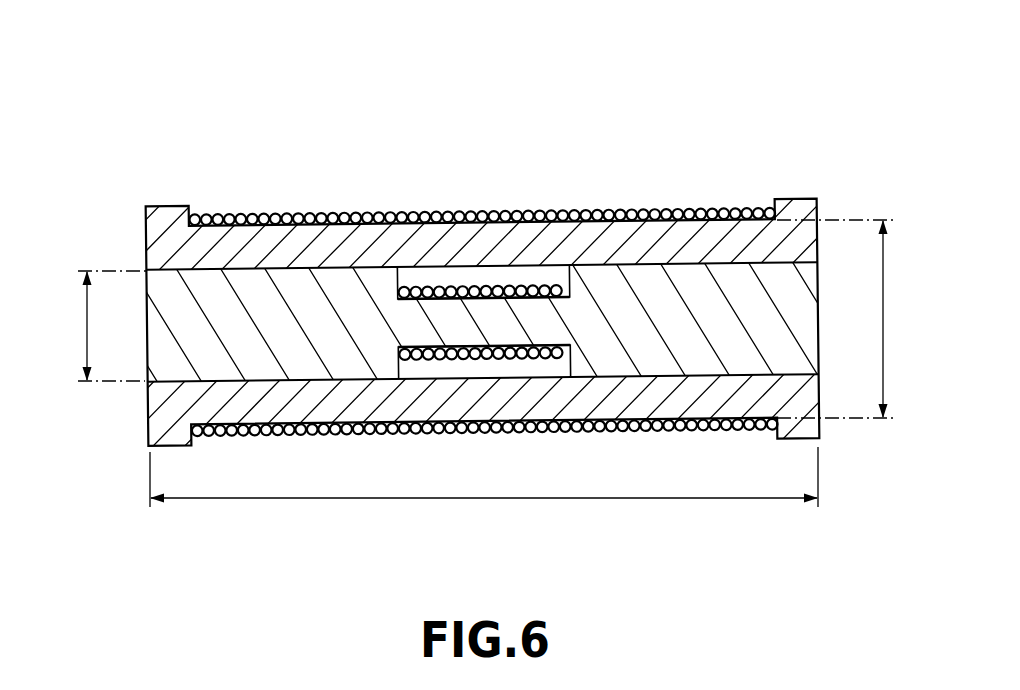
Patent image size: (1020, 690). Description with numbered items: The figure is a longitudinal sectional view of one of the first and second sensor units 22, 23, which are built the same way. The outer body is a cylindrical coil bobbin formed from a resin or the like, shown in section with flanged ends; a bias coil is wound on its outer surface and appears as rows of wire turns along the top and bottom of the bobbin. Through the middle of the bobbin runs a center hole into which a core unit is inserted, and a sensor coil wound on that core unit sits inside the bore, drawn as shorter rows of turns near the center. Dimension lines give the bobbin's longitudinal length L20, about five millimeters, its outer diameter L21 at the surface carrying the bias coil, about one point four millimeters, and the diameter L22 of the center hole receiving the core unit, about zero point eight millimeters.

The first sensor unit 22 is at (476, 236).
The second sensor unit 23 is at (476, 289).
The longitudinal length L20 is at (484, 488).
The diameter L21 is at (855, 319).
The diameter L22 is at (93, 326).